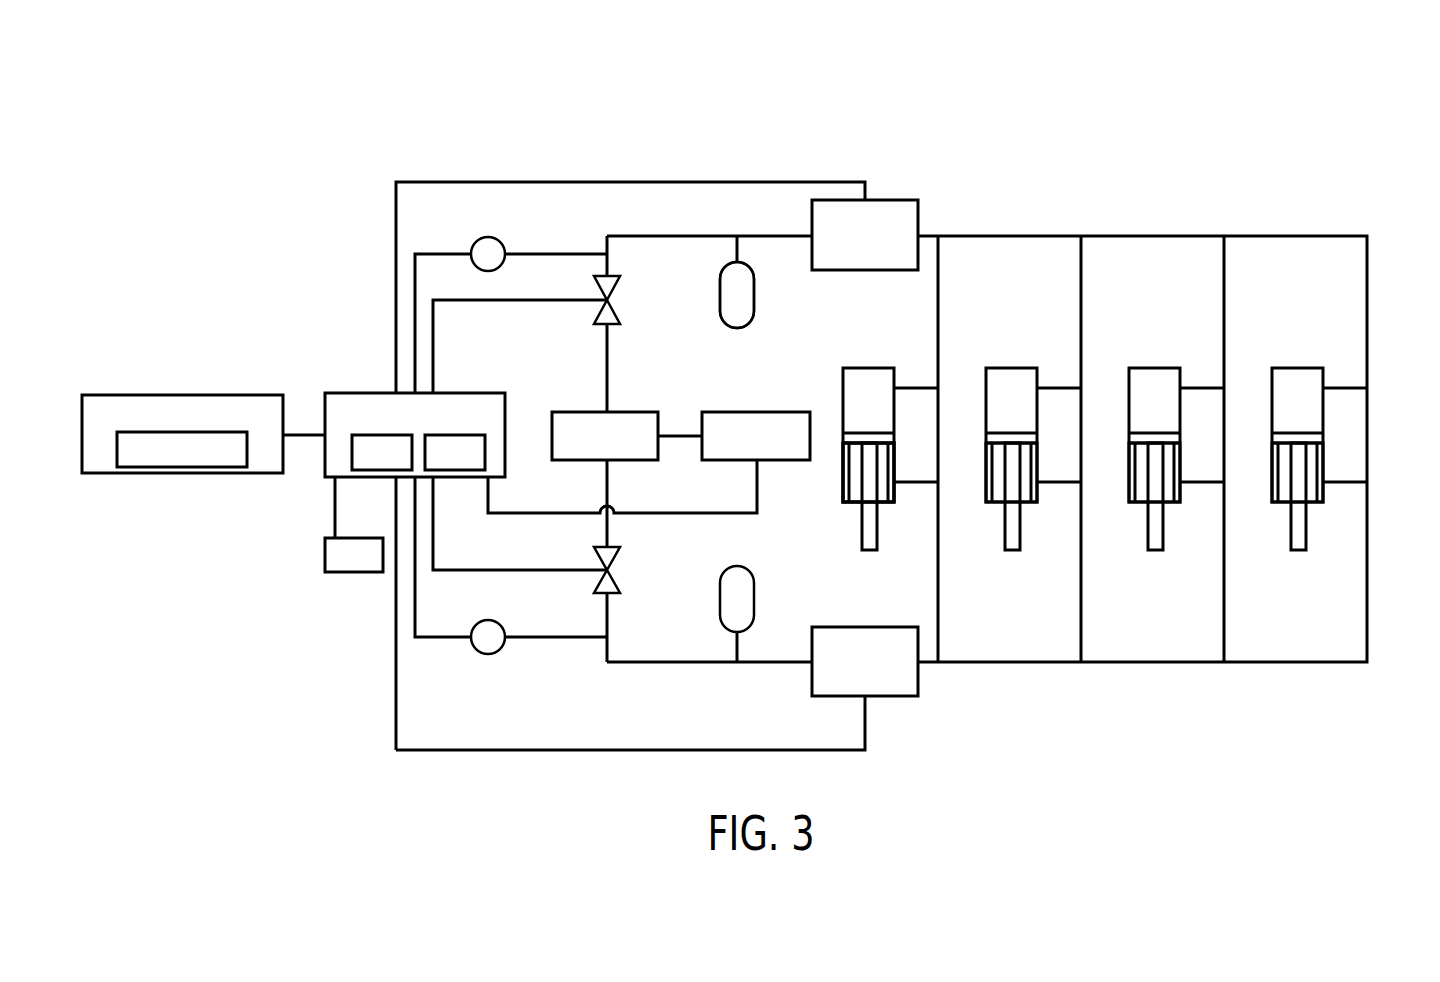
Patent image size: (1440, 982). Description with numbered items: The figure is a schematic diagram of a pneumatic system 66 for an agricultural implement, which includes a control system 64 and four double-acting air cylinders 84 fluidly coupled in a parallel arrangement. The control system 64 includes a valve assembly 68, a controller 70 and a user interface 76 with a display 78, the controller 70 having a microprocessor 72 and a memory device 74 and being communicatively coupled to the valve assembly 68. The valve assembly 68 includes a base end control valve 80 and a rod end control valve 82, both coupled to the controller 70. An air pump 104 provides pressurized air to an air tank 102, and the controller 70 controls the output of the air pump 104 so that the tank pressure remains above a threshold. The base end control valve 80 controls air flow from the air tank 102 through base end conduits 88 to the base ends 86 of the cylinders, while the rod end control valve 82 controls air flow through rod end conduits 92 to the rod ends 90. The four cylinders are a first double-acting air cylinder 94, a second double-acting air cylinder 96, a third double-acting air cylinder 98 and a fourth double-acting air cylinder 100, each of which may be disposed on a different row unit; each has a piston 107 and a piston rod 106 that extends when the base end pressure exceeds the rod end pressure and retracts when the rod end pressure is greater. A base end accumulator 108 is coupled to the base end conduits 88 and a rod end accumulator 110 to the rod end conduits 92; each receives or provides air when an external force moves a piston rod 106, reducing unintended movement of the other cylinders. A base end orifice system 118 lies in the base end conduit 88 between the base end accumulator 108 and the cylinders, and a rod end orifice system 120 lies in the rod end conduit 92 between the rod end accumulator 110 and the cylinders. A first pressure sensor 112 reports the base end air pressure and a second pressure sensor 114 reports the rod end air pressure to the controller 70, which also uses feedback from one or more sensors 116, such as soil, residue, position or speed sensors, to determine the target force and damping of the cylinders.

The control system 64 is at (425, 165).
The pneumatic system 66 is at (752, 125).
The valve assembly 68 is at (613, 165).
The controller 70 is at (480, 393).
The microprocessor 72 is at (382, 470).
The memory device 74 is at (448, 470).
The user interface 76 is at (250, 395).
The controller 78 is at (182, 467).
The base end control valve 80 is at (613, 290).
The rod end control valve 82 is at (613, 560).
The double-acting air cylinder 84 is at (894, 437).
The base end 86 is at (877, 368).
The base end conduit 88 is at (781, 233).
The rod end 90 is at (888, 502).
The rod end conduit 92 is at (1143, 662).
The first double-acting air cylinder 94 is at (938, 450).
The second double-acting air cylinder 96 is at (1037, 437).
The third double-acting air cylinder 98 is at (1180, 437).
The fourth double-acting air cylinder 100 is at (1323, 437).
The air tank 102 is at (625, 412).
The air pump 104 is at (752, 412).
The piston rod 106 is at (870, 550).
The piston 107 is at (870, 432).
The base end accumulator 108 is at (755, 305).
The rod end accumulator 110 is at (755, 609).
The first pressure sensor 112 is at (488, 237).
The second pressure sensor 114 is at (488, 655).
The sensor 116 is at (354, 572).
The base end orifice system 118 is at (893, 200).
The rod end orifice system 120 is at (893, 696).